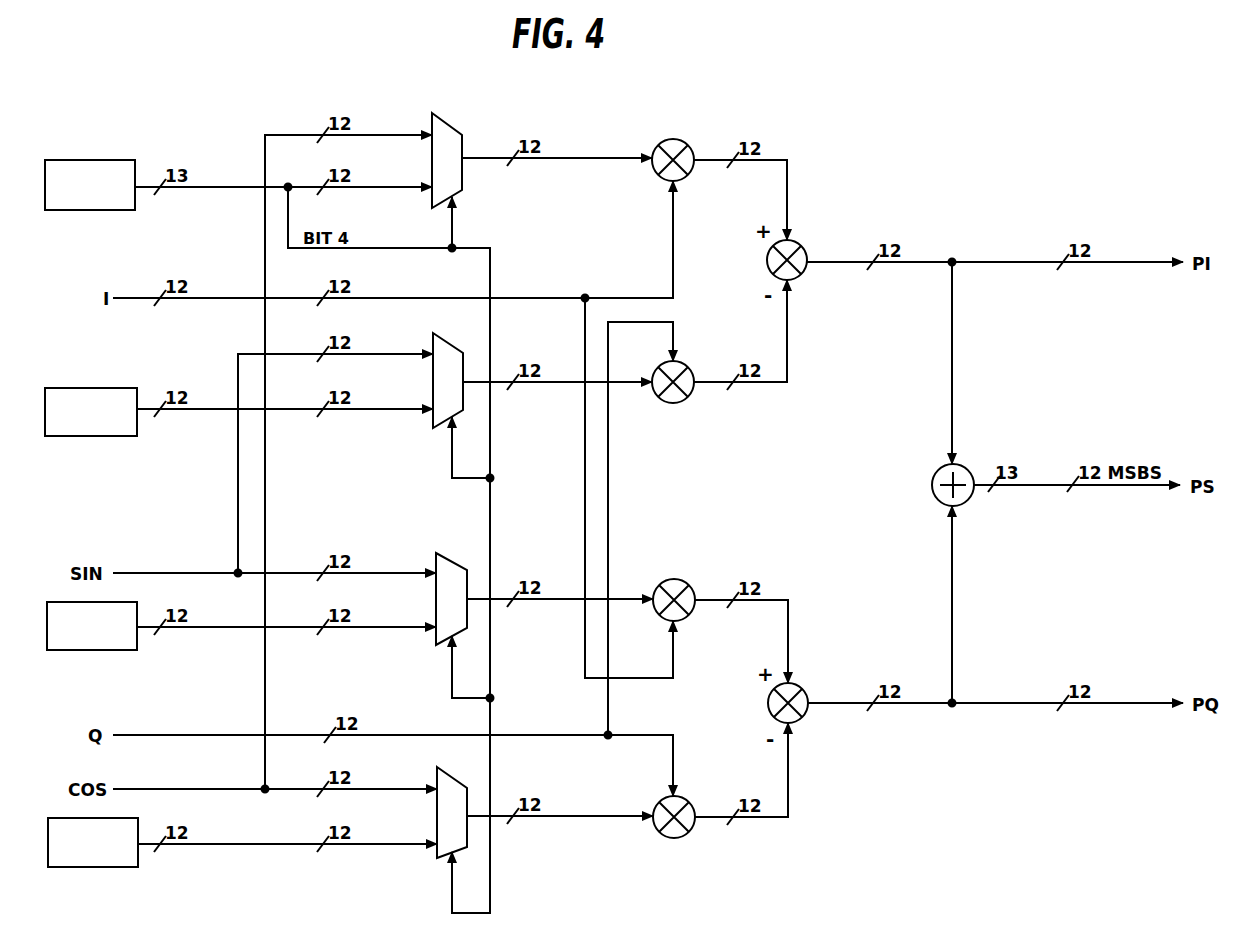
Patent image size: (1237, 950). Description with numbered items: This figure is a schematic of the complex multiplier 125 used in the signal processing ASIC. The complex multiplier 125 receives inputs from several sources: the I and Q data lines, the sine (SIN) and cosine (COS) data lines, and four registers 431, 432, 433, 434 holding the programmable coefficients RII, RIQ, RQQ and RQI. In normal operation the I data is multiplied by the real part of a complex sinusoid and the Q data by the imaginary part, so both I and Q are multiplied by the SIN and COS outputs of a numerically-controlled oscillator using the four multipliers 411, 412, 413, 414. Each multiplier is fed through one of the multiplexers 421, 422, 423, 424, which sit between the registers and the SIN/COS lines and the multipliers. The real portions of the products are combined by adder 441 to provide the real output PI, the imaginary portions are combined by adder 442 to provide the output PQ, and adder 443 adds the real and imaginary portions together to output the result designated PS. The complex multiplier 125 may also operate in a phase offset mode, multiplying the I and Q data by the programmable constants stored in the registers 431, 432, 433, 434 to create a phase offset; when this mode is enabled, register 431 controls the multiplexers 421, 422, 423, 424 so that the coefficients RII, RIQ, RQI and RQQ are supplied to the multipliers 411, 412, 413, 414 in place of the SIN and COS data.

The complex multiplier 125 is at (876, 137).
The multiplier 411 is at (680, 148).
The multiplier 412 is at (688, 397).
The multiplier 413 is at (680, 588).
The multiplier 414 is at (690, 832).
The multiplexer 421 is at (450, 130).
The multiplexer 422 is at (431, 420).
The multiplexer 423 is at (450, 554).
The multiplexer 424 is at (441, 856).
The register 431 is at (102, 161).
The register 432 is at (117, 427).
The register 433 is at (117, 641).
The register 434 is at (117, 858).
The adder 441 is at (816, 236).
The adder 442 is at (804, 692).
The adder 443 is at (940, 478).